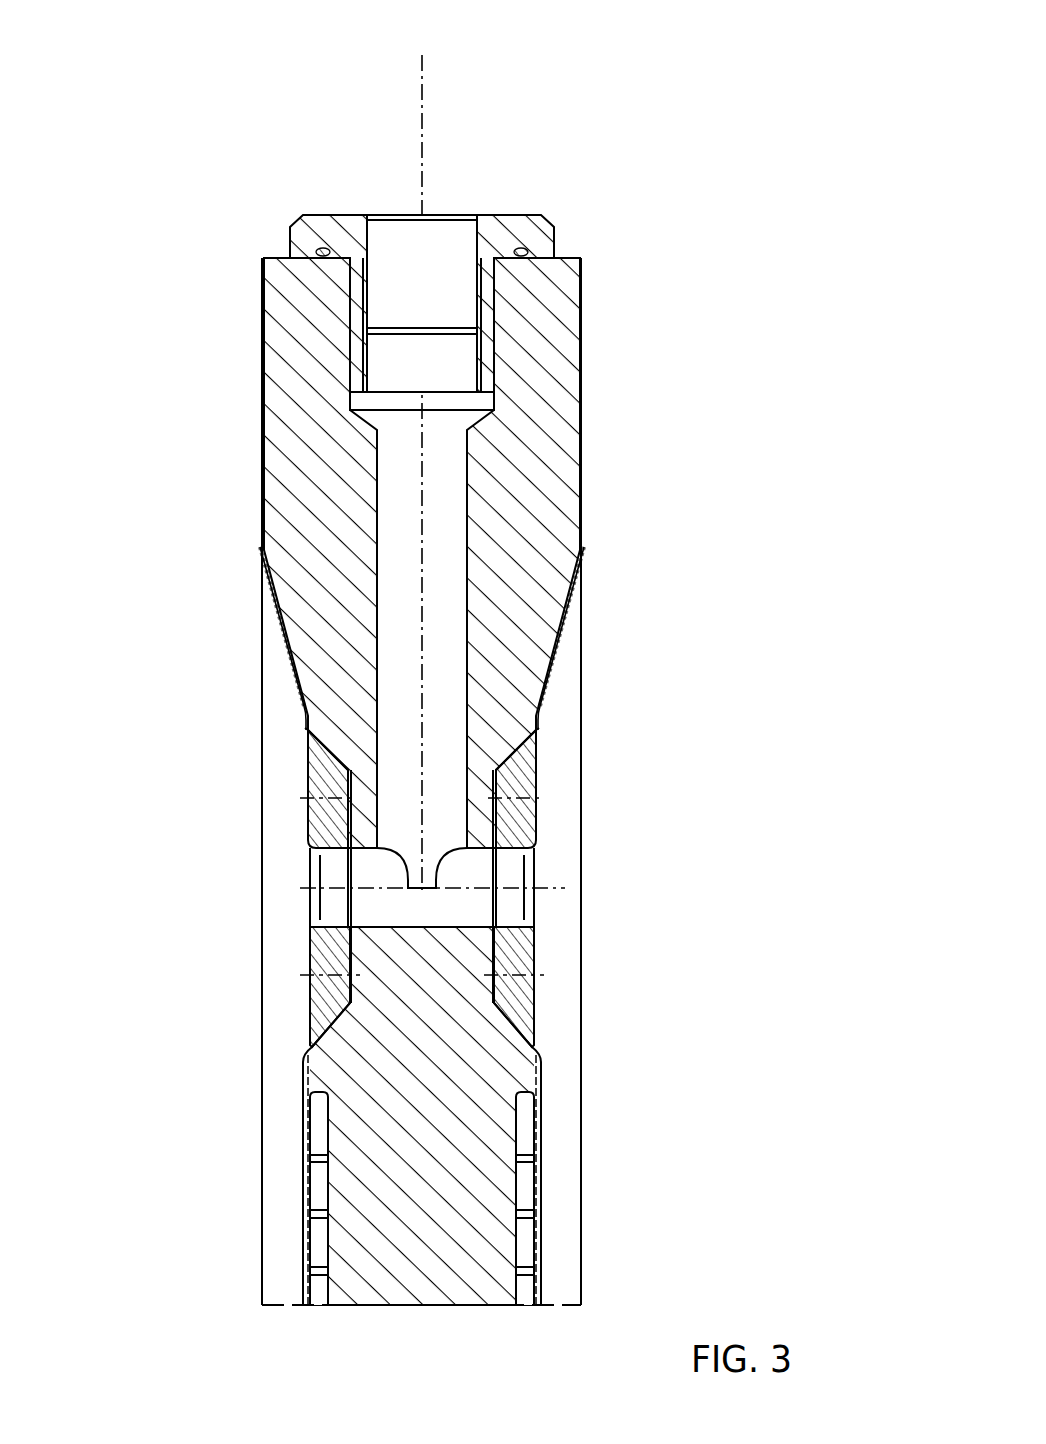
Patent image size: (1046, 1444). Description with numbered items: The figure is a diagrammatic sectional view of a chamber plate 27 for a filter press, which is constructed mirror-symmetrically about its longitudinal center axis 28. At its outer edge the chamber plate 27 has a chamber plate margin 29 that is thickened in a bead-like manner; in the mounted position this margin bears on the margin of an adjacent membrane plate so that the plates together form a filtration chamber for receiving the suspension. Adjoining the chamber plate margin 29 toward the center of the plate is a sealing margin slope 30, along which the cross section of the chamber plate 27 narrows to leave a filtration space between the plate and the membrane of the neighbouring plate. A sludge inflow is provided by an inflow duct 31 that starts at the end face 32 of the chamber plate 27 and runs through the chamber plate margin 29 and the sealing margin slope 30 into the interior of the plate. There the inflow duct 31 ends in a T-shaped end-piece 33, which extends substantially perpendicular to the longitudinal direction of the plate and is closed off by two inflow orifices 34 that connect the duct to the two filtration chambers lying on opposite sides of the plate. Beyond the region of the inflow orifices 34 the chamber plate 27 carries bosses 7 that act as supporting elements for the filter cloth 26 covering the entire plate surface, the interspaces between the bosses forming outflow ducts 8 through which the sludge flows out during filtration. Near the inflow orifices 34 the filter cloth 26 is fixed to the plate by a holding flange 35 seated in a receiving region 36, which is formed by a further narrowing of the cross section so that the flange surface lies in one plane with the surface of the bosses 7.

The bosses 7 is at (530, 1250).
The outflow ducts 8 is at (527, 1158).
The filter cloth 26 is at (540, 1115).
The chamber plate 27 is at (560, 116).
The longitudinal center axis 28 is at (432, 465).
The chamber plate margin 29 is at (567, 318).
The sealing margin slope 30 is at (540, 630).
The inflow duct 31 is at (450, 494).
The end face 32 is at (455, 212).
The T-shaped end-piece 33 is at (441, 920).
The inflow orifices 34 is at (307, 908).
The holding flange 35 is at (307, 783).
The receiving region 36 is at (345, 740).